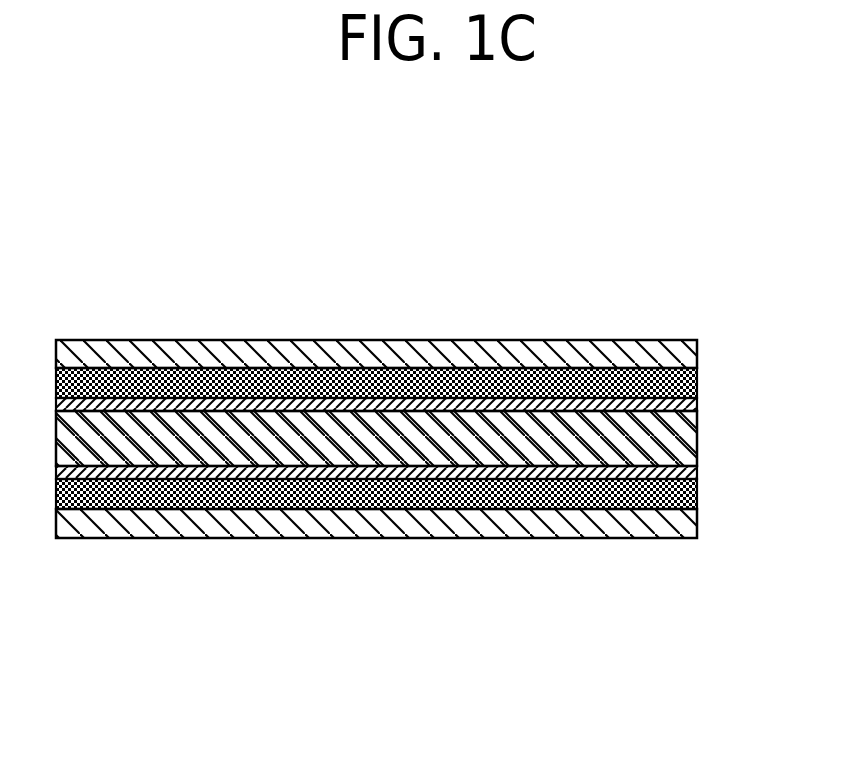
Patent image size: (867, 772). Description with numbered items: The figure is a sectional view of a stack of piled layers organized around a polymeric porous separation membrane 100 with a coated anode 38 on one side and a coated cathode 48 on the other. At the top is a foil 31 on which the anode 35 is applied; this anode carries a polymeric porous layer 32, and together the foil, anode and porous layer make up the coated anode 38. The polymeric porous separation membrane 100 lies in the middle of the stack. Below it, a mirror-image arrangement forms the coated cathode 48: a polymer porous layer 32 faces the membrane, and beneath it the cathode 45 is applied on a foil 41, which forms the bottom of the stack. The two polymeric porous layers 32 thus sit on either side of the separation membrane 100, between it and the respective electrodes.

The foil 31 is at (680, 352).
The polymeric porous layer 32 is at (170, 400).
The anode 35 is at (235, 375).
The coated anode 38 is at (253, 280).
The foil 41 is at (680, 524).
The cathode 45 is at (230, 510).
The coated cathode 48 is at (255, 595).
The polymeric porous separation membrane 100 is at (690, 420).